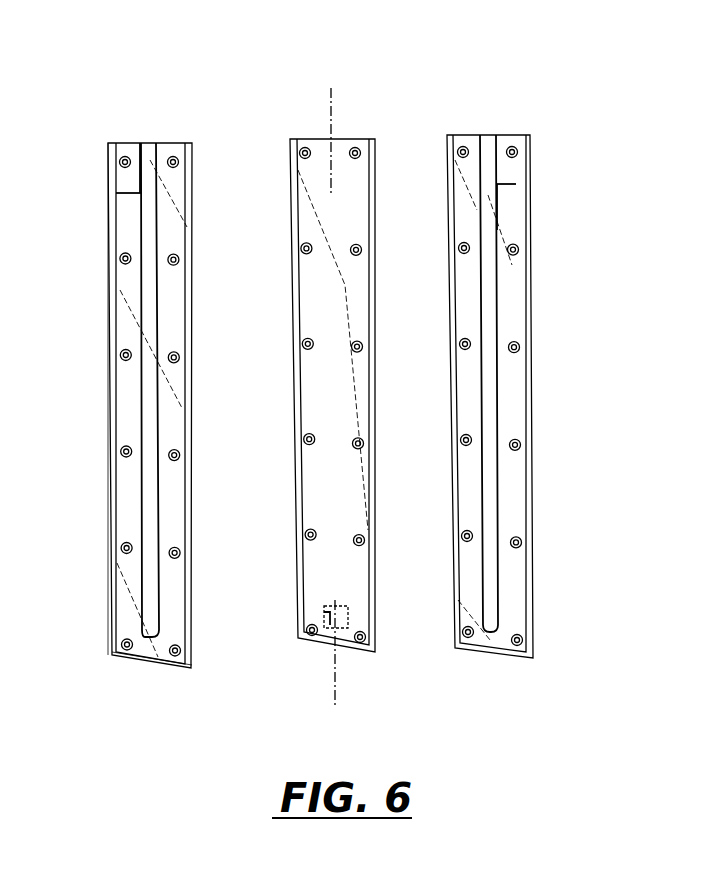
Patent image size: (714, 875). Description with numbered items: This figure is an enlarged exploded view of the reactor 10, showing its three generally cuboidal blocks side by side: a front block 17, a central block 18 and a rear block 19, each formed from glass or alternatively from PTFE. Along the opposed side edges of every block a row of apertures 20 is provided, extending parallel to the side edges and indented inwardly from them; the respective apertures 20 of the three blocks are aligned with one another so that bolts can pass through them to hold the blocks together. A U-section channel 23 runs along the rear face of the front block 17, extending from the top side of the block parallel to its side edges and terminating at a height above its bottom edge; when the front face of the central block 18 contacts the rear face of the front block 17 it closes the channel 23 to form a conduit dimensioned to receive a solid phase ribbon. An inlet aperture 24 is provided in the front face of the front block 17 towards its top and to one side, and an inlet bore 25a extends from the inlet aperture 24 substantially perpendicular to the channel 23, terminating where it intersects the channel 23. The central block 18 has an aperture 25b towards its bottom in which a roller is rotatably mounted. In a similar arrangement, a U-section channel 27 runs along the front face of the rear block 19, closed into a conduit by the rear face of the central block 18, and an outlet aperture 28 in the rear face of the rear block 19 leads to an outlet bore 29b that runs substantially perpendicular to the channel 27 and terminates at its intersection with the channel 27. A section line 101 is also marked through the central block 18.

The reactor 10 is at (440, 64).
The front block 17 is at (106, 186).
The central block 18 is at (288, 162).
The rear block 19 is at (540, 455).
The apertures 20 is at (123, 356).
The channel 23 is at (150, 150).
The inlet aperture 24 is at (116, 194).
The inlet bore 25a is at (137, 190).
The aperture 25b is at (325, 618).
The channel 27 is at (487, 157).
The outlet aperture 28 is at (516, 181).
The outlet bore 29b is at (499, 191).
The section line 101 is at (331, 103).